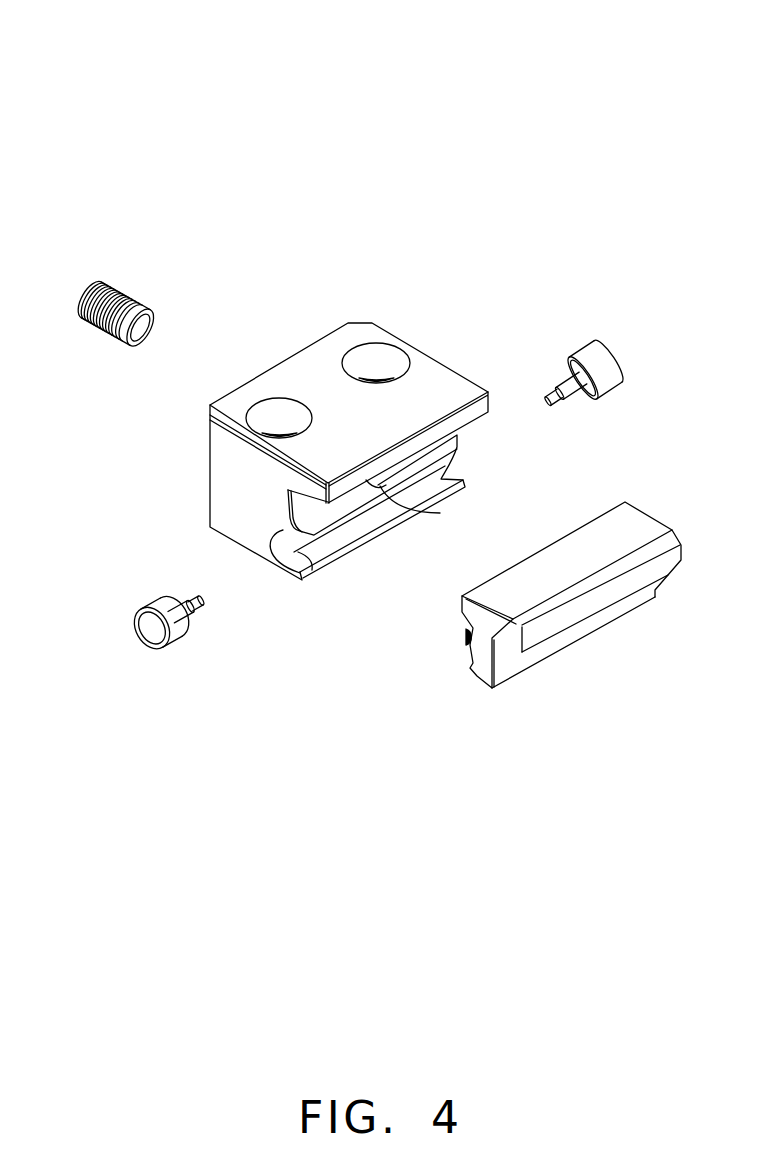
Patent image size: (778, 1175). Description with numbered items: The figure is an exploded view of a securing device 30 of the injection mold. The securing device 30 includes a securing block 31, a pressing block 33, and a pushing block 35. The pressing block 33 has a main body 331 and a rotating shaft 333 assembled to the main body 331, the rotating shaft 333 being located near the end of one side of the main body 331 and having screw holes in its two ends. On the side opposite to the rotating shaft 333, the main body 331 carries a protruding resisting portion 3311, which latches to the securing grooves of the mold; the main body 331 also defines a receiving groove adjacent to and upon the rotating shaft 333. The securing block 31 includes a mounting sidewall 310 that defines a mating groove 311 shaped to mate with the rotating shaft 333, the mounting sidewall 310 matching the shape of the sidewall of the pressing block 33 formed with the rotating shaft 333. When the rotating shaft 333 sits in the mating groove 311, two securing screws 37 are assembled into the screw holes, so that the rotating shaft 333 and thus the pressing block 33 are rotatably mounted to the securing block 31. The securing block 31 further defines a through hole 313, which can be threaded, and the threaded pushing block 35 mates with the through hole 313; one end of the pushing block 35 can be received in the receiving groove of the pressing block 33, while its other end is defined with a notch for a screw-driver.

The securing device 30 is at (402, 52).
The securing block 31 is at (390, 454).
The mounting sidewall 310 is at (473, 408).
The mating groove 311 is at (290, 555).
The through hole 313 is at (440, 513).
The pressing block 33 is at (512, 659).
The main body 331 is at (519, 645).
The rotating shaft 333 is at (465, 638).
The resisting portion 3311 is at (567, 618).
The pushing block 35 is at (85, 298).
The securing screws 37 is at (602, 367).